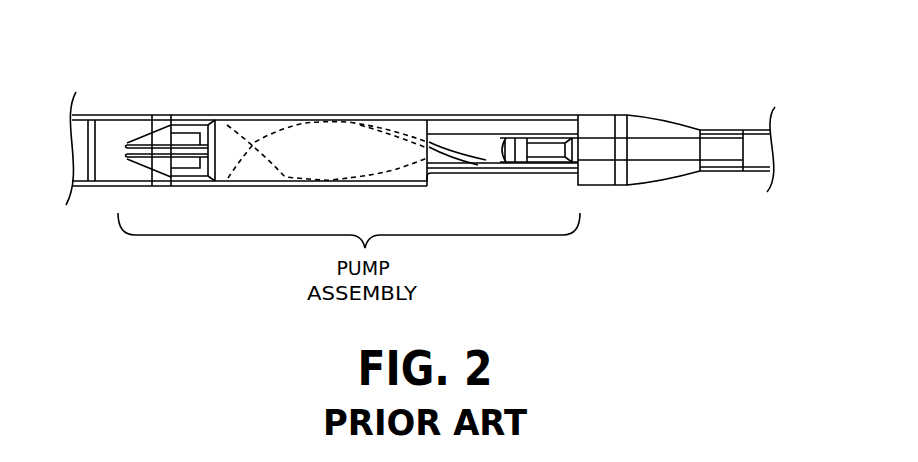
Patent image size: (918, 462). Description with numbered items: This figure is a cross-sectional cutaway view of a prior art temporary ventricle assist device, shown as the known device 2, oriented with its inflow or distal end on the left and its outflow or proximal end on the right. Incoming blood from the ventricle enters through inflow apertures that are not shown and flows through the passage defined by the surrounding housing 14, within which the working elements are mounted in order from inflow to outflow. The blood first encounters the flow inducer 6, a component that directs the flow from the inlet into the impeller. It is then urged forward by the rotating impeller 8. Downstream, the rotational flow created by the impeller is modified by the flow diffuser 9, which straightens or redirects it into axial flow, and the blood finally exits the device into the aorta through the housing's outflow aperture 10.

The known device 2 is at (630, 52).
The flow inducer 6 is at (209, 80).
The impeller 8 is at (356, 75).
The flow diffuser 9 is at (488, 155).
The outflow aperture 10 is at (487, 130).
The housing 14 is at (118, 114).